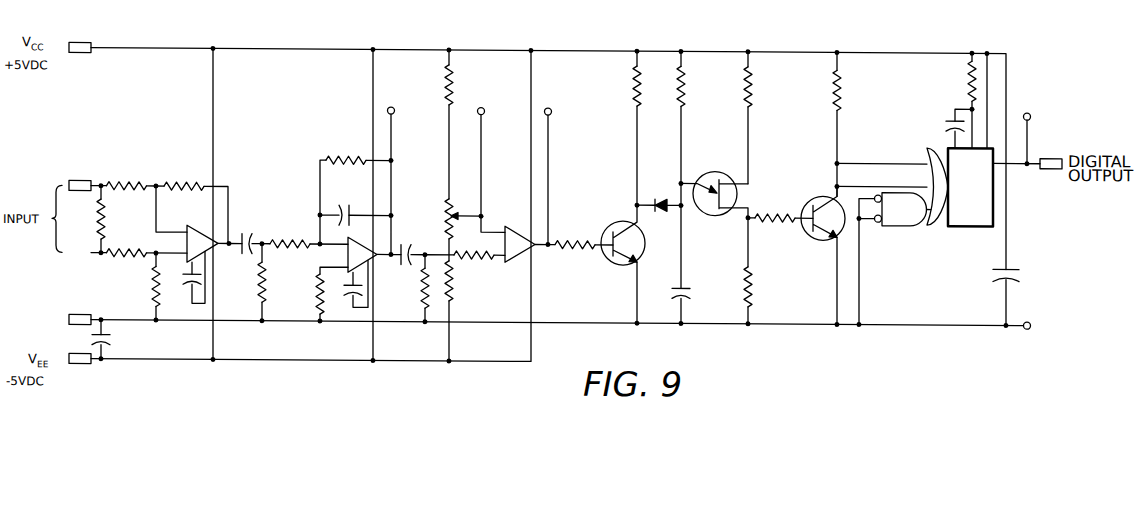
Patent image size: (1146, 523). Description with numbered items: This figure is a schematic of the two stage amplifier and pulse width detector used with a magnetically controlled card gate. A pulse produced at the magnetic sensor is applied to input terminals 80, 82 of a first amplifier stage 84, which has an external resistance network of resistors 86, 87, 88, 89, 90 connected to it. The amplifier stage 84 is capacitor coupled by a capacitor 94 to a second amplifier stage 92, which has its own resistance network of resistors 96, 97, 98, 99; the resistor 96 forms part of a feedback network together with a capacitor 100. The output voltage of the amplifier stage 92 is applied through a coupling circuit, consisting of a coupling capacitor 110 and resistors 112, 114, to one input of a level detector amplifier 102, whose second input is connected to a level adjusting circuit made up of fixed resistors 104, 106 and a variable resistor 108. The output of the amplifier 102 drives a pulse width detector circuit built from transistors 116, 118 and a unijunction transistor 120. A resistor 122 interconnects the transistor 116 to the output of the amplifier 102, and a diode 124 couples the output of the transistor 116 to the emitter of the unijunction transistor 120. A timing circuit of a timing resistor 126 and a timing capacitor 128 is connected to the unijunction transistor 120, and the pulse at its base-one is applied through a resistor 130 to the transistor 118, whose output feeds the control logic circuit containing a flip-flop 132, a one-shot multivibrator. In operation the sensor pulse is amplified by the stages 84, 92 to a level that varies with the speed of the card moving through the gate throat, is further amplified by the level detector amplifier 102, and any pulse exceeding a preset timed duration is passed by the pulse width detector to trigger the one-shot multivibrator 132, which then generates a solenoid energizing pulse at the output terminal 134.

The input terminal 80 is at (80, 180).
The input terminal 82 is at (77, 313).
The amplifier stage 84 is at (199, 223).
The resistor 86 is at (179, 181).
The resistor 87 is at (128, 181).
The resistor 88 is at (100, 225).
The resistor 89 is at (124, 249).
The resistor 90 is at (153, 290).
The amplifier stage 92 is at (346, 257).
The capacitor 94 is at (244, 232).
The resistor 96 is at (347, 153).
The resistor 97 is at (290, 236).
The resistor 98 is at (318, 292).
The resistor 99 is at (259, 292).
The capacitor 100 is at (344, 208).
The level detector amplifier 102 is at (516, 221).
The fixed resistor 104 is at (452, 94).
The fixed resistor 106 is at (453, 291).
The variable resistor 108 is at (445, 204).
The coupling capacitor 110 is at (407, 242).
The resistor 112 is at (485, 258).
The resistor 114 is at (421, 288).
The transistor 116 is at (608, 263).
The transistor 118 is at (815, 194).
The unijunction transistor 120 is at (714, 173).
The resistor 122 is at (573, 235).
The diode 124 is at (658, 197).
The timing resistor 126 is at (682, 91).
The timing capacitor 128 is at (690, 287).
The resistor 130 is at (780, 220).
The flip-flop 132 is at (963, 222).
The output terminal 134 is at (1047, 165).